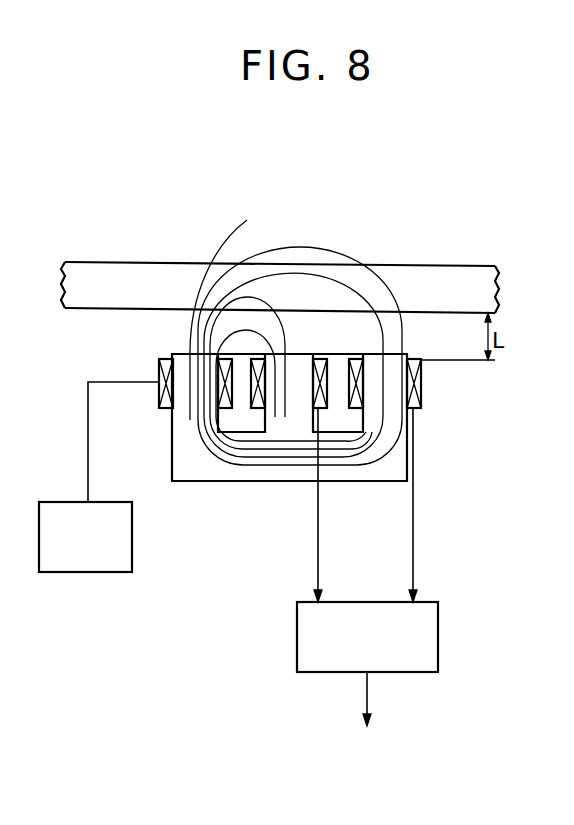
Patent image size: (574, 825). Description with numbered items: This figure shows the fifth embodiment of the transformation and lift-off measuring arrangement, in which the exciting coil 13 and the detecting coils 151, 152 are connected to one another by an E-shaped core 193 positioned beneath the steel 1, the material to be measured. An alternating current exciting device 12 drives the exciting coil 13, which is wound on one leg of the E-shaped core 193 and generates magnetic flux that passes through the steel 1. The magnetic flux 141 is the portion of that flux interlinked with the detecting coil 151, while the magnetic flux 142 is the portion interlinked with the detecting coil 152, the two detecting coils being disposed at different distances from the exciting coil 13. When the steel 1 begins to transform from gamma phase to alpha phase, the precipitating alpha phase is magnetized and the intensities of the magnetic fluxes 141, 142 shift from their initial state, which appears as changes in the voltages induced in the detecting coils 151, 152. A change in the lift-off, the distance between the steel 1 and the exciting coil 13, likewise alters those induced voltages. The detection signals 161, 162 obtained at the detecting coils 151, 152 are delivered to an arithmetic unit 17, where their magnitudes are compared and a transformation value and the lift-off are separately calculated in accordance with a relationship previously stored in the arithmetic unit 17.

The steel 1 is at (446, 265).
The alternating current exciting device 12 is at (133, 512).
The exciting coil 13 is at (159, 362).
The magnetic flux 141 is at (289, 348).
The magnetic flux 142 is at (340, 287).
The detecting coil 151 is at (321, 355).
The detecting coil 152 is at (418, 360).
The detection signal 161 is at (319, 548).
The detection signal 162 is at (414, 548).
The arithmetic unit 17 is at (440, 634).
The E-shaped core 193 is at (289, 439).